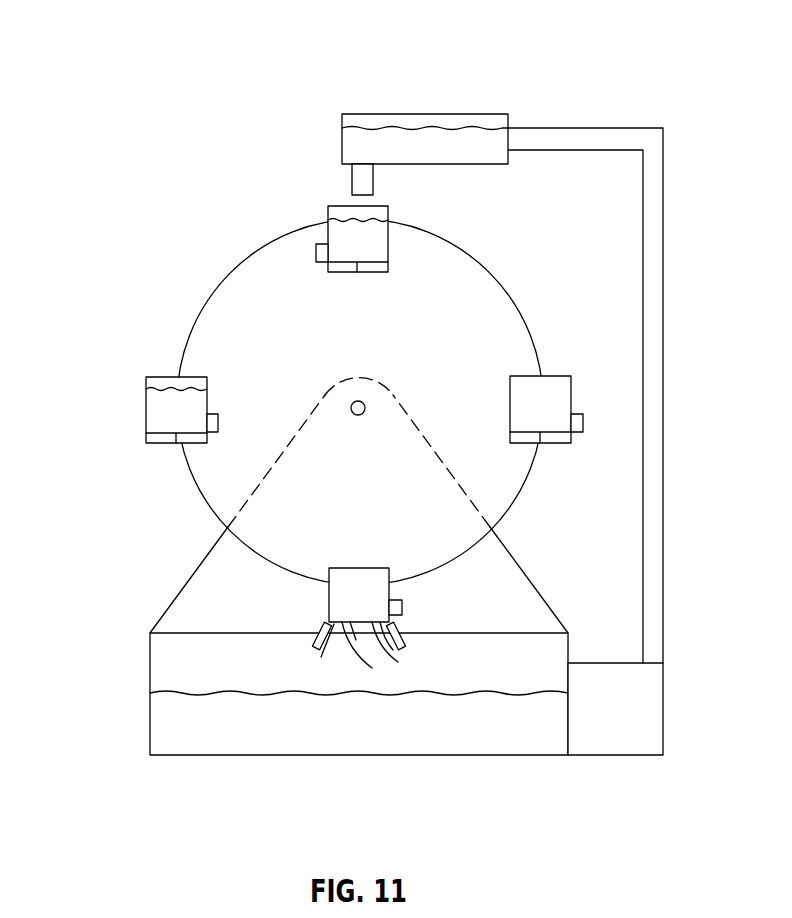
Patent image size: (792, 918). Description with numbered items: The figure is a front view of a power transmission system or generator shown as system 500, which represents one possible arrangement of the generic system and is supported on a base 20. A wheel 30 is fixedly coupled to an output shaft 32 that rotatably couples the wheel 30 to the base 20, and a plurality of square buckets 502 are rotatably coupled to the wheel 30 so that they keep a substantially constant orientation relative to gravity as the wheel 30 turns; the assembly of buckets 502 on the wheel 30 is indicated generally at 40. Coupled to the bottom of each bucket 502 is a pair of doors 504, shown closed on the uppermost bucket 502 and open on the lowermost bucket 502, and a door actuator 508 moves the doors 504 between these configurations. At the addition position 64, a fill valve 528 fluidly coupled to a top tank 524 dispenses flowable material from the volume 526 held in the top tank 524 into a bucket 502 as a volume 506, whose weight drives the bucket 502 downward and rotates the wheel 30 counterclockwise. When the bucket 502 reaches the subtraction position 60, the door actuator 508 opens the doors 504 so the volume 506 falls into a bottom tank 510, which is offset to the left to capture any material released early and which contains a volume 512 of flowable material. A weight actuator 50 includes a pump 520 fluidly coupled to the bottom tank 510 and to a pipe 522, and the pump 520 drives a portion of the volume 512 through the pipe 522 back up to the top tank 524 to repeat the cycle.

The system 500 is at (162, 56).
The base 20 is at (202, 578).
The wheel 30 is at (203, 343).
The output shaft 32 is at (365, 406).
The container assembly 40 is at (432, 212).
The weight actuator 50 is at (611, 775).
The subtraction position 60 is at (318, 604).
The addition position 64 is at (318, 208).
The buckets 502 is at (334, 224).
The pair of doors 504 is at (342, 272).
The volume of flowable material 506 is at (378, 248).
The door actuator 508 is at (320, 263).
The bottom tank 510 is at (150, 668).
The volume of flowable material 512 is at (247, 755).
The pump 520 is at (663, 715).
The pipe 522 is at (533, 133).
The top tank 524 is at (429, 114).
The volume of flowable material 526 is at (495, 158).
The fill valve 528 is at (360, 196).